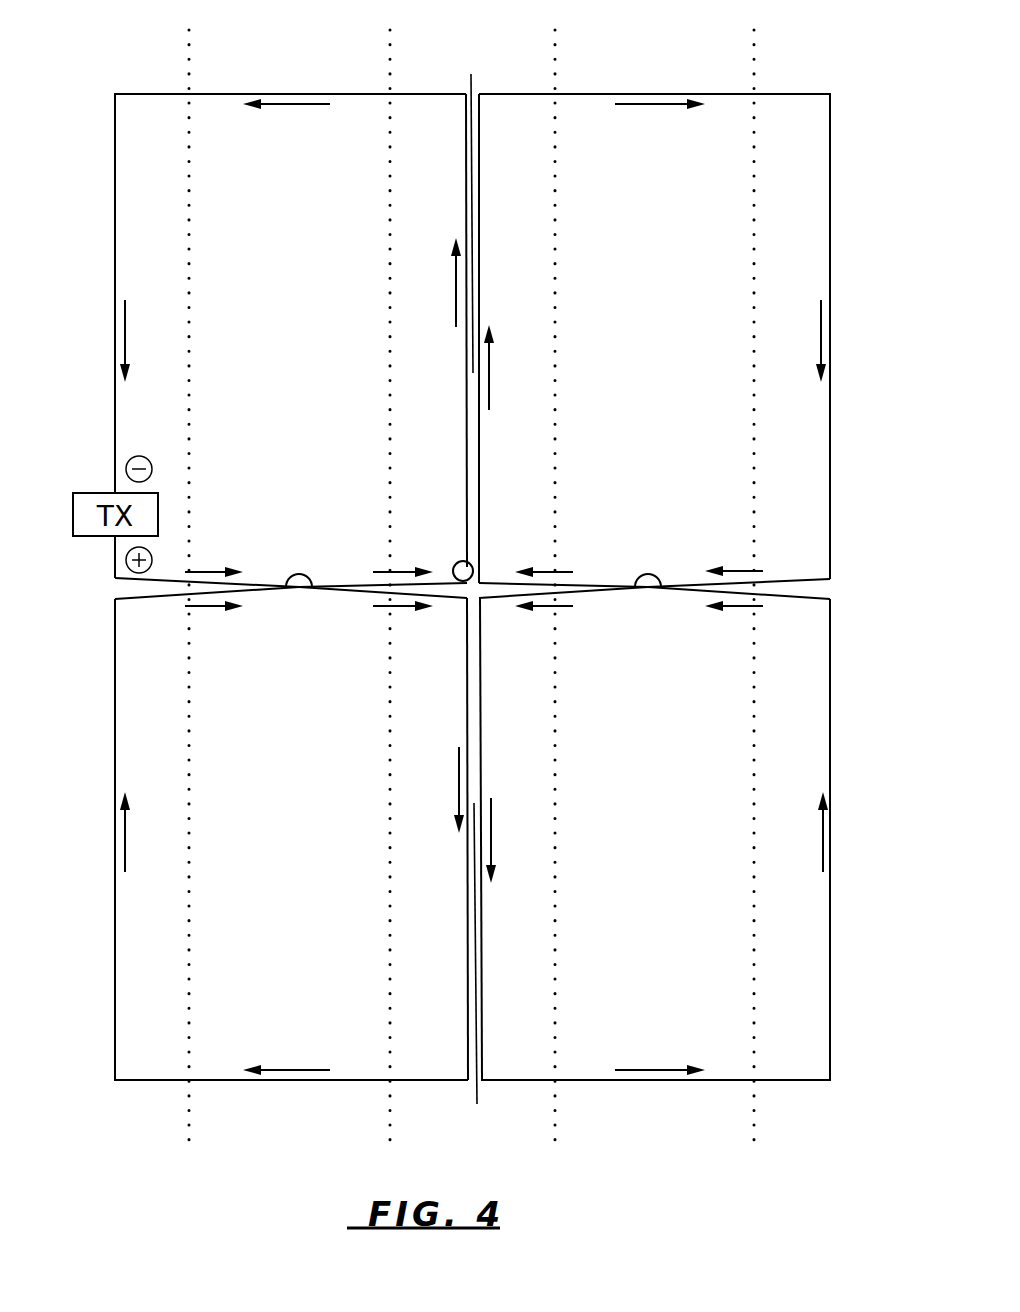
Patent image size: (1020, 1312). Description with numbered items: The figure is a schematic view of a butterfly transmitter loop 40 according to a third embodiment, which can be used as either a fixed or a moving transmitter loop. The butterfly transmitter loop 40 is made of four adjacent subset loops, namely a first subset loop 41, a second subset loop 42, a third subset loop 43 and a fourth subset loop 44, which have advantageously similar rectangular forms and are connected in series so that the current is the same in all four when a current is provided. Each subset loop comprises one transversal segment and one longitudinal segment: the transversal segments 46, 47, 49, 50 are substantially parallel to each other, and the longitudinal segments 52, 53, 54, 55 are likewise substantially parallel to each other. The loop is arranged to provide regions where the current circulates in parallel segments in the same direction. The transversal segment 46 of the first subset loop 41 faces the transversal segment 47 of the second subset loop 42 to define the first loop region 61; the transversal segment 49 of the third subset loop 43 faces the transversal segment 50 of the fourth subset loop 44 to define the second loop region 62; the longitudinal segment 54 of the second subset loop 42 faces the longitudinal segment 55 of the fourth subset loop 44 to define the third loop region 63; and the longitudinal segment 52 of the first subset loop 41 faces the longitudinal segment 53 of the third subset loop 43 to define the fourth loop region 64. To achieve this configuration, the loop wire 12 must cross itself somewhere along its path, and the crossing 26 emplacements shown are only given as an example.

The loop wire 12 is at (514, 94).
The crossing 26 is at (462, 568).
The butterfly transmitter loop 40 is at (853, 96).
The first subset loop 41 is at (265, 976).
The second subset loop 42 is at (685, 977).
The third subset loop 43 is at (263, 203).
The fourth subset loop 44 is at (685, 202).
The transversal segment 46 is at (467, 682).
The transversal segment 47 is at (481, 755).
The transversal segment 49 is at (466, 438).
The transversal segment 50 is at (480, 517).
The longitudinal segment 52 is at (352, 600).
The longitudinal segment 53 is at (355, 582).
The longitudinal segment 54 is at (593, 600).
The longitudinal segment 55 is at (592, 581).
The first loop region 61 is at (477, 969).
The second loop region 62 is at (477, 211).
The third loop region 63 is at (745, 588).
The fourth loop region 64 is at (200, 590).